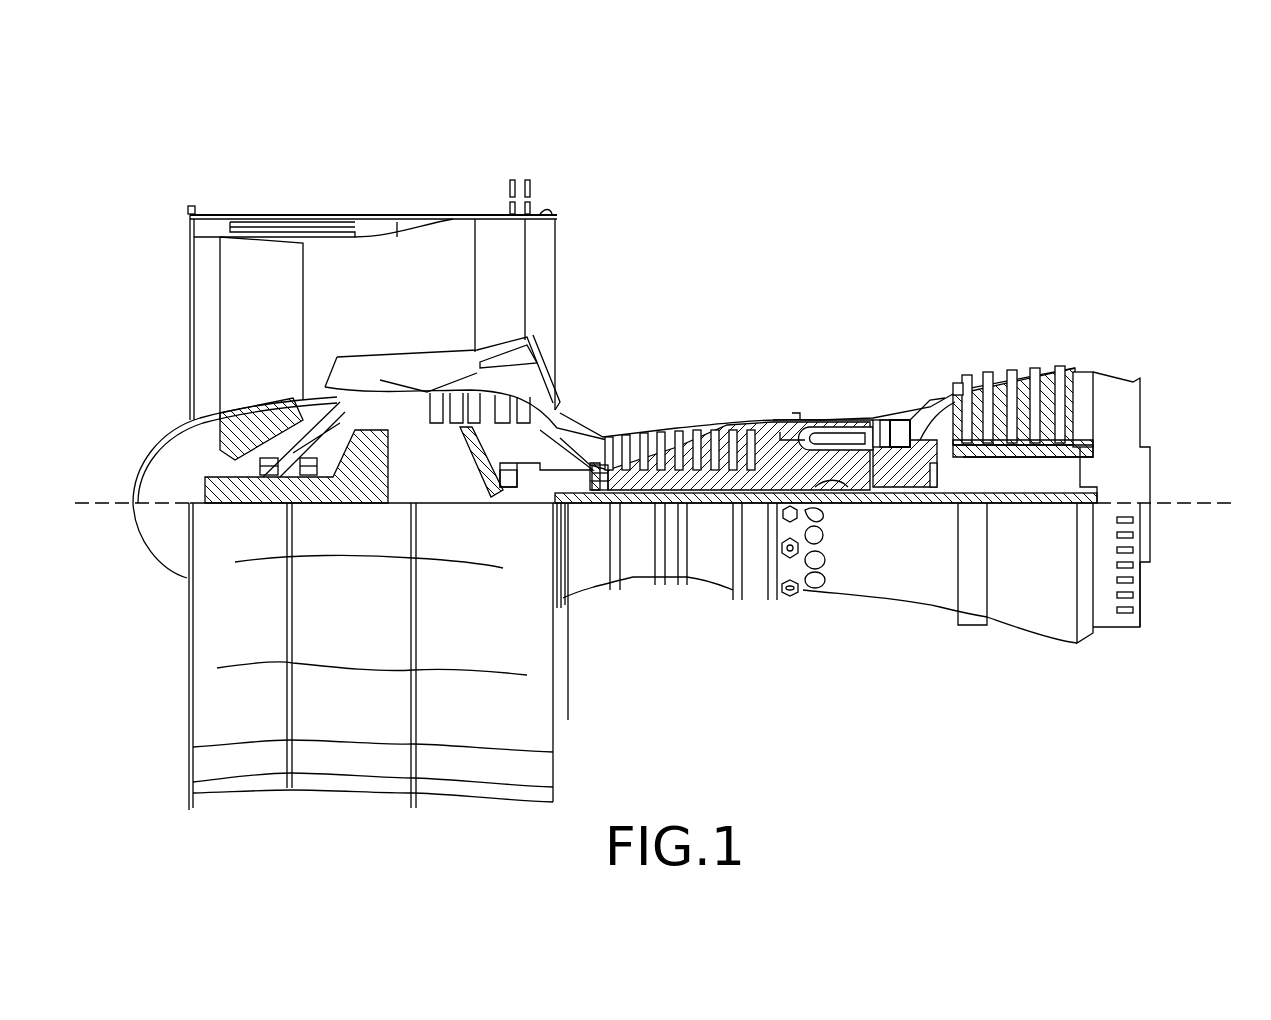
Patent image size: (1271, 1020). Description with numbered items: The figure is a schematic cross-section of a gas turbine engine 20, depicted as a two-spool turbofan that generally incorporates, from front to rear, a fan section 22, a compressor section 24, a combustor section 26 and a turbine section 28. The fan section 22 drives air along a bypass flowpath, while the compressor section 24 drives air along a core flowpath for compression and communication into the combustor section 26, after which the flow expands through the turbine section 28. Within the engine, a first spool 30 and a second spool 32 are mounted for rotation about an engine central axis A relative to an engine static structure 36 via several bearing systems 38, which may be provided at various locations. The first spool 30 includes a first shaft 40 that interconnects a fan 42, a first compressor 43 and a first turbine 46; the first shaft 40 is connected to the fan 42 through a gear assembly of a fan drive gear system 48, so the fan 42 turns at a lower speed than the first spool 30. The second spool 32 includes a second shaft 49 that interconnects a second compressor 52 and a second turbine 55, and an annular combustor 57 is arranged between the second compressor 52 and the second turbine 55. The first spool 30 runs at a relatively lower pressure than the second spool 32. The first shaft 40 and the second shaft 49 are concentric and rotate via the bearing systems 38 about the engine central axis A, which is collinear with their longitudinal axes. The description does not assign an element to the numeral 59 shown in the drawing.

The gas turbine engine 20 is at (843, 258).
The fan section 22 is at (295, 200).
The compressor section 24 is at (605, 393).
The combustor section 26 is at (827, 385).
The turbine section 28 is at (980, 308).
The first spool 30 is at (710, 508).
The second spool 32 is at (765, 470).
The engine static structure 36 is at (753, 592).
The bearing systems 38 is at (505, 480).
The first shaft 40 is at (572, 505).
The fan 42 is at (372, 522).
The first compressor 43 is at (490, 403).
The first turbine 46 is at (1025, 392).
The fan drive gear system 48 is at (370, 485).
The second shaft 49 is at (835, 490).
The second compressor 52 is at (690, 470).
The second turbine 55 is at (900, 420).
The annular combustor 57 is at (828, 440).
The turbine frame 59 is at (937, 425).
The engine central axis A is at (1197, 497).